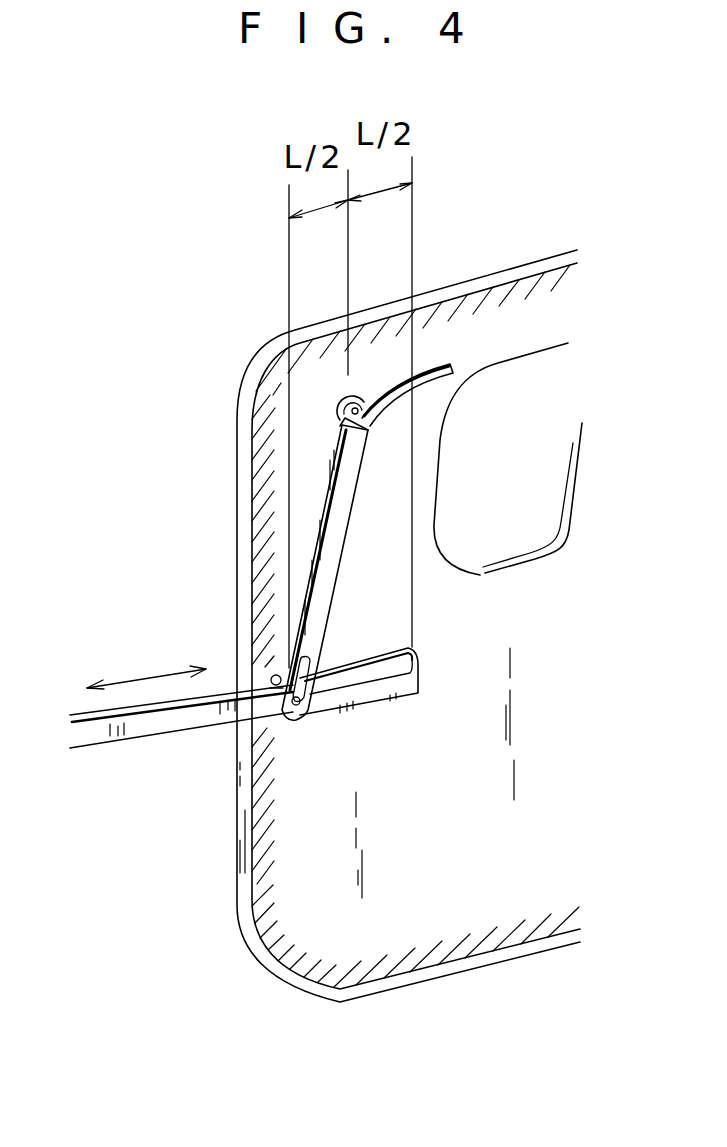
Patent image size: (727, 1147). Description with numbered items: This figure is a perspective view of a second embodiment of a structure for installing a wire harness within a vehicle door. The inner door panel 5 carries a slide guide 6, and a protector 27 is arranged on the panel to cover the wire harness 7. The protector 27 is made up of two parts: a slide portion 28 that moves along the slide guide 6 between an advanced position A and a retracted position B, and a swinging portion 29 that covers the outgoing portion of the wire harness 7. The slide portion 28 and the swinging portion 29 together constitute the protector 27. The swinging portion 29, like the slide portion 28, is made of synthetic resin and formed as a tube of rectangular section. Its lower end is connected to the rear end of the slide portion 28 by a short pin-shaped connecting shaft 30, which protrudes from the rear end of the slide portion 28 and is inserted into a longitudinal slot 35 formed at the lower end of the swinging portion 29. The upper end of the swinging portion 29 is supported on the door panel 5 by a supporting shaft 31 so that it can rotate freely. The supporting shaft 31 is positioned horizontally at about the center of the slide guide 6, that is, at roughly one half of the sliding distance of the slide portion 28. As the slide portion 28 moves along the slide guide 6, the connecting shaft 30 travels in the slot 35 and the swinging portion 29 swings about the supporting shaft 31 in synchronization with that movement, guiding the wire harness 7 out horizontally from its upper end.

The inner door panel 5 is at (388, 917).
The slide guide 6 is at (390, 697).
The wire harness 7 is at (398, 383).
The protector 27 is at (229, 670).
The slide portion 28 is at (170, 733).
The swinging portion 29 is at (348, 525).
The connecting shaft 30 is at (305, 707).
The supporting shaft 31 is at (360, 432).
The slot 35 is at (313, 649).
The advanced position A is at (297, 722).
The retracted position B is at (425, 687).